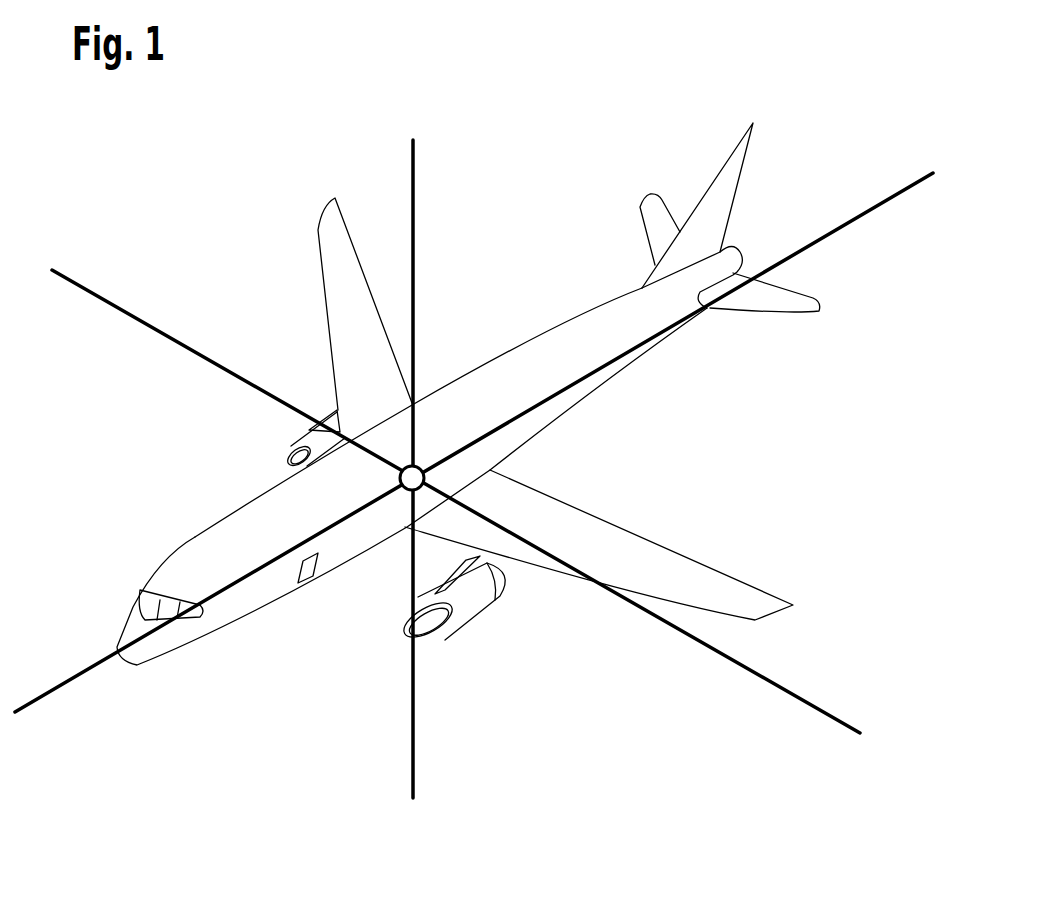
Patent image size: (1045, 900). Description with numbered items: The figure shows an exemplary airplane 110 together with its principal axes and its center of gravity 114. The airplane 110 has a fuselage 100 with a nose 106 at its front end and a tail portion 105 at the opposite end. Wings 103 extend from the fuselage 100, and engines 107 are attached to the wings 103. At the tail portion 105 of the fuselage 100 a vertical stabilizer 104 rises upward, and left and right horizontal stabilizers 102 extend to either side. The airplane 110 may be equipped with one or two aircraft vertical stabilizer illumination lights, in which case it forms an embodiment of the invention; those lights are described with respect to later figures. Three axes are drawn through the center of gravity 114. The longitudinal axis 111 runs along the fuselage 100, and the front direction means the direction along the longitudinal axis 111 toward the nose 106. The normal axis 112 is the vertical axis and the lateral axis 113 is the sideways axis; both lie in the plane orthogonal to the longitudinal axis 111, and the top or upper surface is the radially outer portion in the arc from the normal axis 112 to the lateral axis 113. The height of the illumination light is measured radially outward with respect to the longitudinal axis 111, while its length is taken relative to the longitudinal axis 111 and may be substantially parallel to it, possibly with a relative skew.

The fuselage 100 is at (533, 353).
The horizontal stabilizers 102 is at (657, 215).
The wings 103 is at (337, 267).
The vertical stabilizer 104 is at (727, 160).
The tail portion 105 is at (693, 338).
The nose 106 is at (133, 628).
The engines 107 is at (280, 455).
The airplane 110 is at (523, 165).
The longitudinal axis 111 is at (873, 208).
The normal axis 112 is at (414, 749).
The lateral axis 113 is at (143, 300).
The center of gravity 114 is at (432, 478).